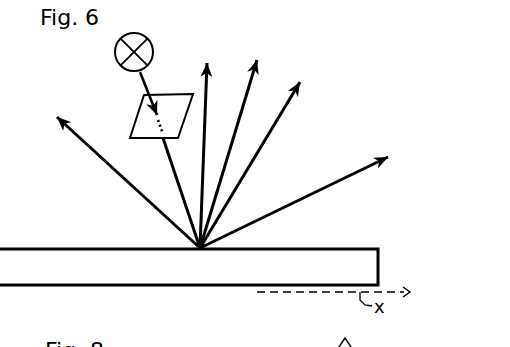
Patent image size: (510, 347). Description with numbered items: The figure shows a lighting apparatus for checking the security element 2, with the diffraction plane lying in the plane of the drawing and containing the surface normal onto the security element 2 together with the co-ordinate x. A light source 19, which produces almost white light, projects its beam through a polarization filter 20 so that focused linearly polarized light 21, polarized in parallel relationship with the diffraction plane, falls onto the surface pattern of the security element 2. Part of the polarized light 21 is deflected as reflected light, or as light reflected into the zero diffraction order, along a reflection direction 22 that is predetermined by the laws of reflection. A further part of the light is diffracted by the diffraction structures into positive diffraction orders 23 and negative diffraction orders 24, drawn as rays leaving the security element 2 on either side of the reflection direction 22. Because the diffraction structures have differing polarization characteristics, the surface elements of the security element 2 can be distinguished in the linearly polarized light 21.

The security element 2 is at (22, 274).
The light source 19 is at (122, 58).
The polarization filter 20 is at (131, 125).
The linearly polarized light 21 is at (168, 164).
The reflection direction 22 is at (247, 100).
The positive diffraction orders 23 is at (323, 187).
The negative diffraction orders 24 is at (203, 175).